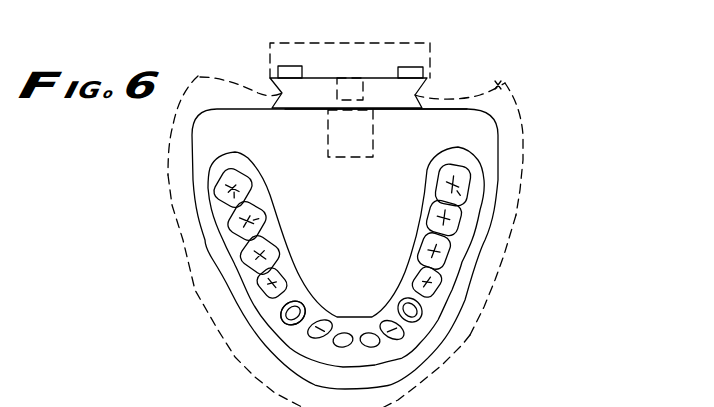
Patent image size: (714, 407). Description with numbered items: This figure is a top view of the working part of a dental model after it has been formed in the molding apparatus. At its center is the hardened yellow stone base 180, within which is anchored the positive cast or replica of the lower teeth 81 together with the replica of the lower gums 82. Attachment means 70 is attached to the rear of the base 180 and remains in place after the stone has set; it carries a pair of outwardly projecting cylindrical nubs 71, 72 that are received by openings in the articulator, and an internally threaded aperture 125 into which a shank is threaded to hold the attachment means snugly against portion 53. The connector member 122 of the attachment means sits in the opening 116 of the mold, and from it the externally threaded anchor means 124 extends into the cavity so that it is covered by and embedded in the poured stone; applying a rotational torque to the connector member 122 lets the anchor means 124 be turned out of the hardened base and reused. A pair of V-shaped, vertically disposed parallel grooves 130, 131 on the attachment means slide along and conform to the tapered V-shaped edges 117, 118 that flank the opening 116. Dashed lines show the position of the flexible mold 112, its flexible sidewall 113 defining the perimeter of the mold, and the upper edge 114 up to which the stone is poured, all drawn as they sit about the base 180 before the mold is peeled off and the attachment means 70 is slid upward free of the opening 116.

The portion 53 is at (432, 43).
The attachment means 70 is at (323, 86).
The cylindrical nub 71 is at (297, 67).
The cylindrical nub 72 is at (397, 67).
The replica of the lower teeth 81 is at (417, 233).
The replica of the lower gums 82 is at (278, 309).
The flexible mold 112 is at (462, 355).
The flexible sidewall 113 is at (518, 224).
The upper edge 114 is at (509, 143).
The opening 116 is at (276, 102).
The V-shaped edge 117 is at (200, 77).
The V-shaped edge 118 is at (499, 84).
The connector member 122 is at (385, 110).
The anchor means 124 is at (357, 157).
The internally threaded aperture 125 is at (355, 86).
The V-shaped groove 130 is at (440, 83).
The V-shaped groove 131 is at (272, 81).
The yellow stone base 180 is at (346, 257).